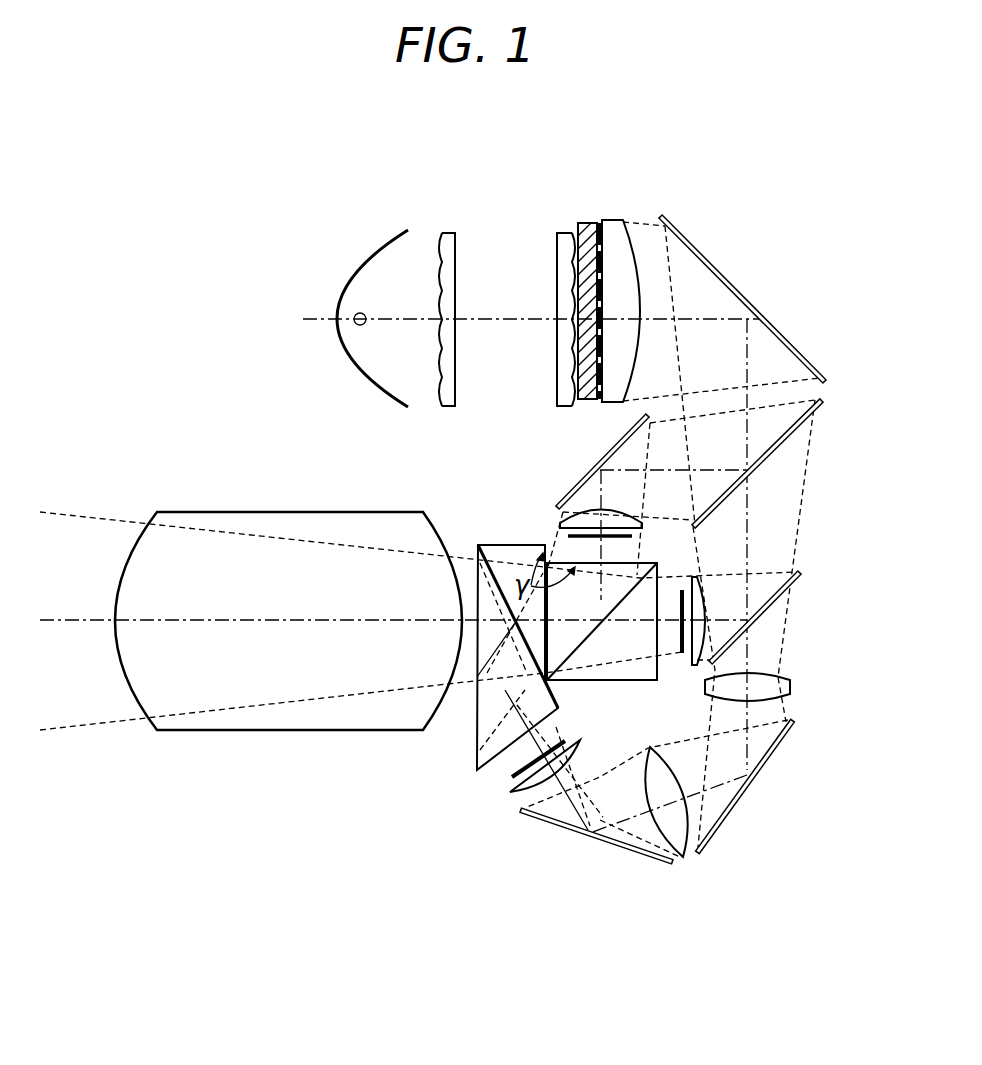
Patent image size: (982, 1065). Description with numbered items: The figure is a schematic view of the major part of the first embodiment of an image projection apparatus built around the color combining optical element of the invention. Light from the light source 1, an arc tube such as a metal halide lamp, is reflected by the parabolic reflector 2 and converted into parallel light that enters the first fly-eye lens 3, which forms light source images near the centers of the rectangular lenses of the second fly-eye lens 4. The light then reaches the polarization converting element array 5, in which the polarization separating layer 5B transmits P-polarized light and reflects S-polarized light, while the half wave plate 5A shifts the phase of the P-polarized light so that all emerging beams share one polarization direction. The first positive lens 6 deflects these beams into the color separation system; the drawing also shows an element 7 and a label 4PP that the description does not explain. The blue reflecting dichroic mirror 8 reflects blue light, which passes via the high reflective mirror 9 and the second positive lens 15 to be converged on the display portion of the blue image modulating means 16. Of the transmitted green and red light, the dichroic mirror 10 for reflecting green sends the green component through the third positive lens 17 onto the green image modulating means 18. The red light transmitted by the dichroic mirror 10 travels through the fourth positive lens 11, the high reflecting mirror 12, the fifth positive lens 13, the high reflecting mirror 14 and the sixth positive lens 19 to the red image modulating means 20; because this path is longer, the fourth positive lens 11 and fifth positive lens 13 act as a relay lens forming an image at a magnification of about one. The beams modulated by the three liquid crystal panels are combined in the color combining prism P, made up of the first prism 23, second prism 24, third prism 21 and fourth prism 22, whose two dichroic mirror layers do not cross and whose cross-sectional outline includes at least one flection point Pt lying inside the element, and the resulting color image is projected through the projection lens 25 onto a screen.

The light source 1 is at (354, 318).
The reflector 2 is at (380, 250).
The first fly-eye lens 3 is at (450, 233).
The second fly-eye lens 4 is at (563, 230).
The polarization converting element array 5 is at (574, 267).
The half wave plate 5A is at (598, 222).
The polarization separating layer 5B is at (582, 223).
The first positive lens 6 is at (612, 220).
The reflecting mirror 7 is at (693, 243).
The blue reflecting dichroic mirror 8 is at (822, 405).
The high reflective mirror 9 is at (598, 462).
The dichroic mirror for reflecting green 10 is at (802, 575).
The fourth positive lens 11 is at (790, 687).
The high reflecting mirror 12 is at (752, 787).
The fifth positive lens 13 is at (688, 860).
The high reflecting mirror 14 is at (588, 840).
The second positive lens 15 is at (562, 527).
The blue image modulating means 16 is at (583, 538).
The third positive lens 17 is at (693, 577).
The green image modulating means 18 is at (681, 652).
The sixth positive lens 19 is at (508, 797).
The red image modulating means 20 is at (508, 770).
The third prism 21 is at (656, 562).
The fourth prism 22 is at (570, 681).
The first prism 23 is at (429, 627).
The second prism 24 is at (478, 550).
The projection lens 25 is at (288, 512).
The polarization plane direction 4PP is at (478, 545).
The flection point Pt is at (510, 543).
The color combining prism P is at (447, 737).